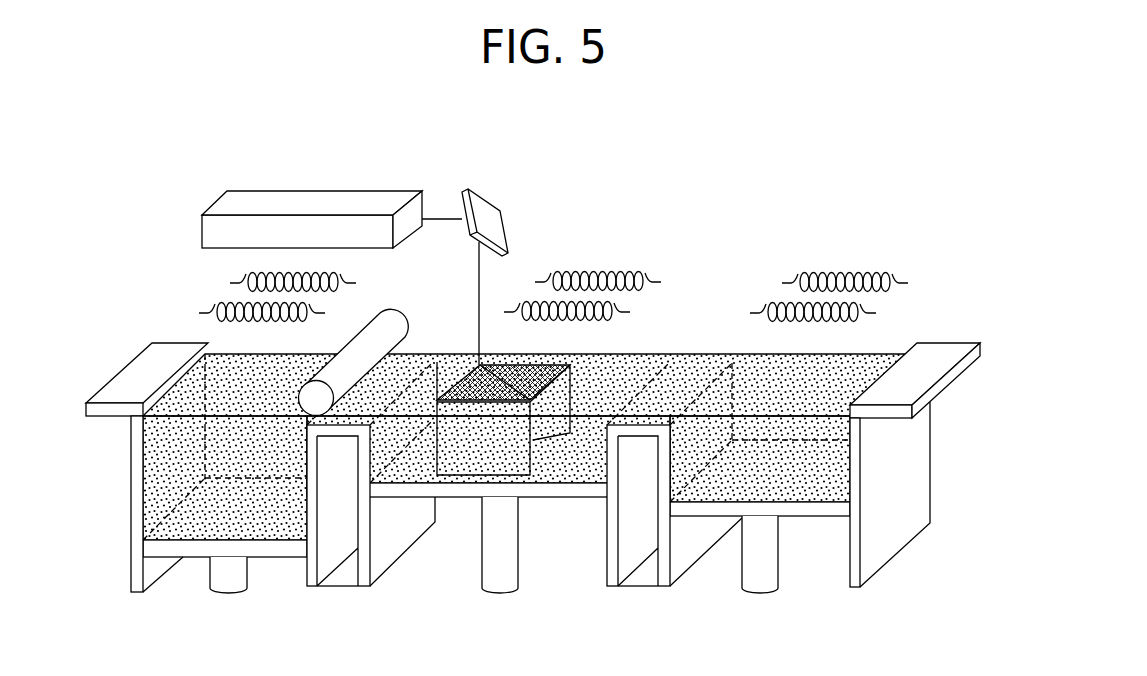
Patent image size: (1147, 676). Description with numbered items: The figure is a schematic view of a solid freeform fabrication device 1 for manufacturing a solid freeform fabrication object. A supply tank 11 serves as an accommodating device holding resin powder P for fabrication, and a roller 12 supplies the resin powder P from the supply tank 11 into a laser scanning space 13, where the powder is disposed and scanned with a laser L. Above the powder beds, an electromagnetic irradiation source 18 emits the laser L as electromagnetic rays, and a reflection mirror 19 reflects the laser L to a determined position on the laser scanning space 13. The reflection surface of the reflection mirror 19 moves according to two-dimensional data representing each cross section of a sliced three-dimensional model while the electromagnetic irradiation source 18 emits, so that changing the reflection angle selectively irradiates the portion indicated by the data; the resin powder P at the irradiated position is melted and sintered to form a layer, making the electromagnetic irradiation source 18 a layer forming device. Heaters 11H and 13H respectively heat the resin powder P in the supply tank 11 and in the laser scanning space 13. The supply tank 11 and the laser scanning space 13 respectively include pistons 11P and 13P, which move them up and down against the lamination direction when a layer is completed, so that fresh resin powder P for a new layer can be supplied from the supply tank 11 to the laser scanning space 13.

The solid freeform fabrication device 1 is at (113, 111).
The supply tank 11 is at (228, 345).
The heater 11H is at (204, 287).
The piston 11P is at (248, 593).
The roller 12 is at (399, 317).
The laser scanning space 13 is at (641, 341).
The heater 13H is at (633, 264).
The piston 13P is at (520, 591).
The electromagnetic irradiation source 18 is at (318, 190).
The reflection mirror 19 is at (484, 202).
The laser L is at (440, 214).
The resin powder P is at (716, 353).